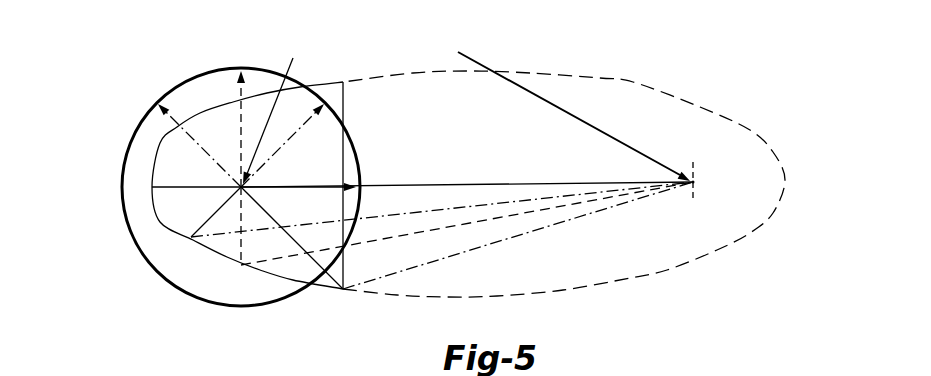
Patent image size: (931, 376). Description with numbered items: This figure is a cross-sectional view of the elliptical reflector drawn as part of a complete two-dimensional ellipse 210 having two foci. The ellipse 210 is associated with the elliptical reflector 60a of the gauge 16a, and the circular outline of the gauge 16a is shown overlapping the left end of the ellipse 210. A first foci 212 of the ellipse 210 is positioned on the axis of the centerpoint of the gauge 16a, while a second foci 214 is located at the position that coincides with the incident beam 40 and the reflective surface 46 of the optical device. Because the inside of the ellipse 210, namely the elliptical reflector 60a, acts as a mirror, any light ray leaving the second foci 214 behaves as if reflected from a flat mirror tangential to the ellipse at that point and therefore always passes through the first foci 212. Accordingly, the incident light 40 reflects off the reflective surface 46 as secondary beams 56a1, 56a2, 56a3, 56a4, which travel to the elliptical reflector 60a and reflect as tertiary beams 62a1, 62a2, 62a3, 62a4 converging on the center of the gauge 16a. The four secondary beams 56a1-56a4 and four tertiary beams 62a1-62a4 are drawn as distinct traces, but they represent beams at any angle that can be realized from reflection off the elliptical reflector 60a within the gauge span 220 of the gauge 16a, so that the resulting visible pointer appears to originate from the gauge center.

The gauge 16a is at (142, 150).
The elliptical reflector 60a is at (170, 228).
The tertiary beam 62a1 is at (181, 128).
The tertiary beam 62a2 is at (237, 97).
The tertiary beam 62a3 is at (300, 128).
The tertiary beam 62a4 is at (316, 185).
The first foci 212 is at (278, 104).
The second foci 214 is at (556, 107).
The ellipse 210 is at (629, 79).
The incident beam 40 is at (695, 158).
The reflective surface 46 is at (694, 181).
The secondary beam 56a1 is at (631, 203).
The secondary beam 56a2 is at (526, 213).
The secondary beam 56a3 is at (447, 209).
The secondary beam 56a4 is at (519, 185).
The gauge span 220 is at (290, 375).